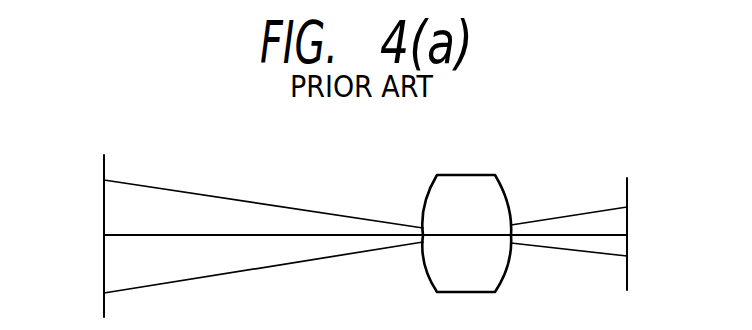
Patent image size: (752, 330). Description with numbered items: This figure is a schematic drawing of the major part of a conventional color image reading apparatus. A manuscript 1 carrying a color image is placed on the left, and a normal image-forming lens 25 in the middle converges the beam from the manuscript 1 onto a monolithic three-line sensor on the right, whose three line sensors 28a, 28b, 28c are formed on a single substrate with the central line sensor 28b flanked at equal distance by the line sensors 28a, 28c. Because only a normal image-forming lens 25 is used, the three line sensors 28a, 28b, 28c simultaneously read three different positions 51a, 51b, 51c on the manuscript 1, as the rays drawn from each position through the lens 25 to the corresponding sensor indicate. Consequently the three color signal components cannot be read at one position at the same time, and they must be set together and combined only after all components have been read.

The manuscript 1 is at (104, 165).
The image-forming lens 25 is at (483, 175).
The position on the manuscript 51a is at (117, 294).
The position on the manuscript 51b is at (117, 236).
The position on the manuscript 51c is at (117, 181).
The line sensor 28a is at (612, 207).
The central line sensor 28b is at (612, 235).
The line sensor 28c is at (612, 256).